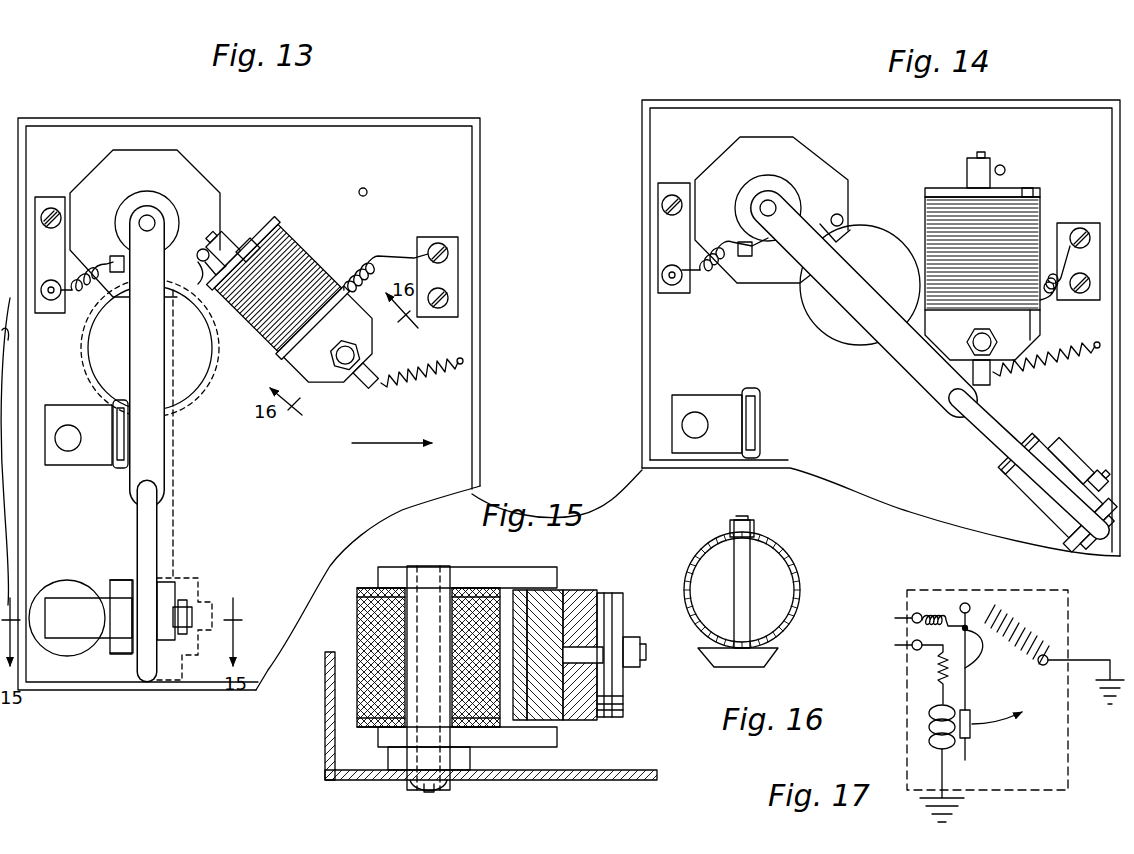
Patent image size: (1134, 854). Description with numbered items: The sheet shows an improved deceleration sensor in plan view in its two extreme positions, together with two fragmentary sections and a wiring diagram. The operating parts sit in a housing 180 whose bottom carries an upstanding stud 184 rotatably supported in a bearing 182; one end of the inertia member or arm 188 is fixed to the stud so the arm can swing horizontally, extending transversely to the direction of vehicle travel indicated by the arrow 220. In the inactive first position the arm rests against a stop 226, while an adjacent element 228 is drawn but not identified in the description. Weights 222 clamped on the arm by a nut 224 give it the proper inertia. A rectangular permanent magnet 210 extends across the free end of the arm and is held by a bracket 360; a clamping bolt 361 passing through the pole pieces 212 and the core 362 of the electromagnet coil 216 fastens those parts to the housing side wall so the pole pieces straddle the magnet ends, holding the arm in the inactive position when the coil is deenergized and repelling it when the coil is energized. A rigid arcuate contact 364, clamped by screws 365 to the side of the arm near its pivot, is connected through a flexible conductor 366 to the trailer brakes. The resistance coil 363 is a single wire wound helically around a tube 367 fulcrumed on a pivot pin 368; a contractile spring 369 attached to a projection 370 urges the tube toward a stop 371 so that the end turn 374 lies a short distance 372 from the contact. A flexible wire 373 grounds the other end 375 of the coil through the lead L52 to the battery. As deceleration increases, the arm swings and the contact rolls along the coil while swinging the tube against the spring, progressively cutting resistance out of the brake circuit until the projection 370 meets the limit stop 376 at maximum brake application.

In FIG. 13, the housing 180 is at (430, 118).
In FIG. 14, the housing 180 is at (740, 104).
In FIG. 15, the housing 180 is at (326, 724).
In FIG. 16, the housing 180 is at (748, 664).
In FIG. 13, the bearing 182 is at (126, 212).
In FIG. 14, the bearing 182 is at (748, 216).
In FIG. 13, the stud 184 is at (149, 214).
In FIG. 14, the stud 184 is at (758, 206).
In FIG. 13, the inertia member or arm 188 is at (164, 480).
In FIG. 14, the inertia member or arm 188 is at (880, 336).
In FIG. 15, the inertia member or arm 188 is at (582, 602).
In FIG. 13, the permanent magnet 210 is at (122, 594).
In FIG. 14, the permanent magnet 210 is at (1020, 490).
In FIG. 15, the permanent magnet 210 is at (546, 600).
In FIG. 17, the permanent magnet 210 is at (966, 740).
In FIG. 15, the pole pieces 212 is at (482, 568).
In FIG. 13, the electromagnet coil 216 is at (66, 580).
In FIG. 15, the electromagnet coil 216 is at (362, 632).
In FIG. 17, the electromagnet coil 216 is at (922, 714).
In FIG. 13, the direction of travel arrow 220 is at (388, 454).
In FIG. 13, the weights 222 is at (166, 582).
In FIG. 14, the weights 222 is at (1040, 444).
In FIG. 15, the weights 222 is at (610, 712).
In FIG. 13, the nut 224 is at (182, 617).
In FIG. 14, the nut 224 is at (1070, 464).
In FIG. 15, the nut 224 is at (628, 664).
In FIG. 13, the stop 226 is at (136, 408).
In FIG. 14, the stop 226 is at (762, 414).
In FIG. 13, the mounting plate 228 is at (92, 466).
In FIG. 14, the mounting plate 228 is at (710, 394).
In FIG. 13, the bracket 360 is at (112, 640).
In FIG. 14, the bracket 360 is at (1010, 484).
In FIG. 15, the bracket 360 is at (520, 598).
In FIG. 15, the clamping bolt 361 is at (440, 790).
In FIG. 15, the core 362 is at (408, 600).
In FIG. 13, the resistance coil 363 is at (308, 272).
In FIG. 14, the resistance coil 363 is at (1040, 222).
In FIG. 16, the resistance coil 363 is at (788, 562).
In FIG. 17, the resistance coil 363 is at (1022, 614).
In FIG. 13, the contact 364 is at (218, 356).
In FIG. 14, the contact 364 is at (900, 250).
In FIG. 17, the contact 364 is at (984, 664).
In FIG. 13, the screws 365 is at (201, 255).
In FIG. 14, the screws 365 is at (822, 222).
In FIG. 13, the flexible conductor 366 is at (94, 284).
In FIG. 14, the flexible conductor 366 is at (730, 276).
In FIG. 17, the flexible conductor 366 is at (940, 614).
In FIG. 13, the tube 367 is at (276, 224).
In FIG. 14, the tube 367 is at (1042, 194).
In FIG. 16, the tube 367 is at (796, 566).
In FIG. 13, the pivot pin 368 is at (346, 358).
In FIG. 14, the pivot pin 368 is at (992, 342).
In FIG. 16, the pivot pin 368 is at (734, 612).
In FIG. 13, the contractile spring 369 is at (424, 376).
In FIG. 14, the contractile spring 369 is at (1046, 364).
In FIG. 13, the projection 370 is at (226, 240).
In FIG. 14, the projection 370 is at (986, 168).
In FIG. 13, the stop 371 is at (203, 248).
In FIG. 14, the stop 371 is at (842, 216).
In FIG. 13, the short distance 372 is at (192, 300).
In FIG. 13, the flexible wire 373 is at (398, 258).
In FIG. 14, the flexible wire 373 is at (1042, 298).
In FIG. 13, the end turn 374 is at (246, 250).
In FIG. 13, the other end of resistance coil 375 is at (352, 292).
In FIG. 13, the limit stop 376 is at (367, 190).
In FIG. 14, the limit stop 376 is at (1006, 170).
In FIG. 17, the lead L52 is at (1094, 660).